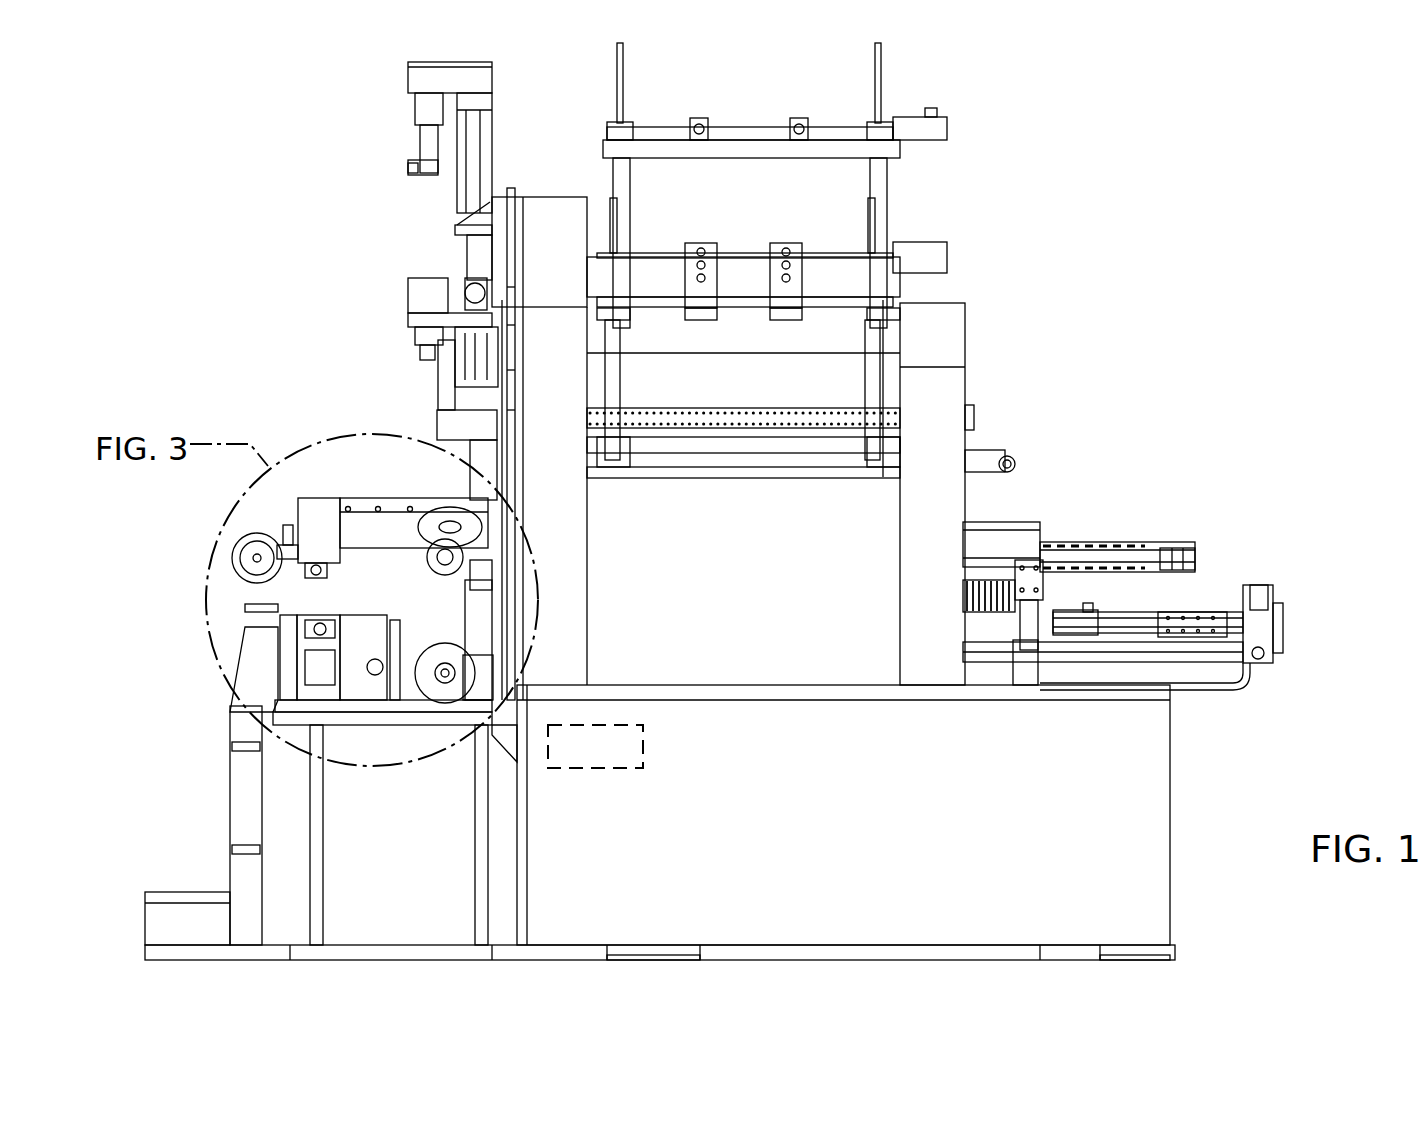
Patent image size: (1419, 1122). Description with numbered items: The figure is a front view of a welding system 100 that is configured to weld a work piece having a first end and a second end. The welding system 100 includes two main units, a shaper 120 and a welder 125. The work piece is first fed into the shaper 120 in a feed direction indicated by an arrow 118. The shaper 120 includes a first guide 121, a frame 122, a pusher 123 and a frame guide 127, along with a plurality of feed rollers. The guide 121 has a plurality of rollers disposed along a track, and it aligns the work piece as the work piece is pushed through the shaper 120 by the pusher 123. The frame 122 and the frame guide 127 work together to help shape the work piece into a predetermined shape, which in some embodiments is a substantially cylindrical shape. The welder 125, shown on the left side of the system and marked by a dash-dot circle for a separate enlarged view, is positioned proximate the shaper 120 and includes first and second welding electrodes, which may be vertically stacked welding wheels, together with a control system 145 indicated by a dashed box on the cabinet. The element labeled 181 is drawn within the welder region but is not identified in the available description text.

The welding system 100 is at (1222, 139).
The arrow 118 is at (1082, 457).
The shaper 120 is at (1047, 419).
The first guide 121 is at (1176, 542).
The frame 122 is at (957, 380).
The pusher 123 is at (1266, 656).
The welder 125 is at (185, 609).
The frame guide 127 is at (727, 418).
The control system 145 is at (595, 746).
The arm assembly 181 is at (352, 490).